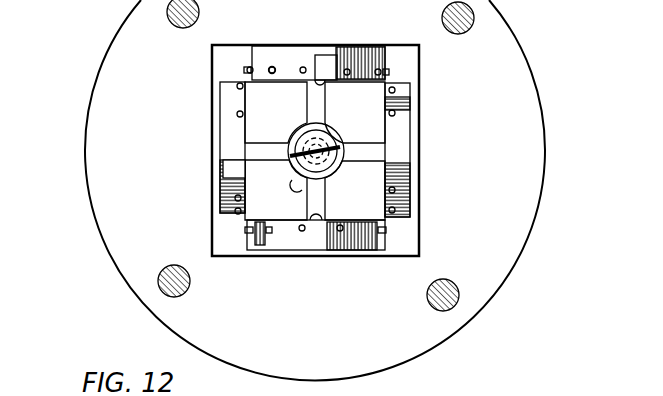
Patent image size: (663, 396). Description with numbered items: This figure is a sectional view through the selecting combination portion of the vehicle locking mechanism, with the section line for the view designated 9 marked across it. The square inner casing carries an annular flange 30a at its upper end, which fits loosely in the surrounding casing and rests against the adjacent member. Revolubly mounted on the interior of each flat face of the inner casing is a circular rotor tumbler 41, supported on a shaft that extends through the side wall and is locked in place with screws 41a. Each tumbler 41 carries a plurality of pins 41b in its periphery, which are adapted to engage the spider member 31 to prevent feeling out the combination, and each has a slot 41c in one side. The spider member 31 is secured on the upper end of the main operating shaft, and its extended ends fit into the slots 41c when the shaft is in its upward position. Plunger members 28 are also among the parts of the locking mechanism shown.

The latch member 9 is at (180, 145).
The plunger members 28 is at (452, 295).
The annular flange 30a is at (128, 218).
The spider member 31 is at (275, 143).
The rotor tumblers 41 is at (353, 48).
The screws 41a is at (245, 139).
The pins 41b is at (272, 67).
The slot 41c is at (323, 55).